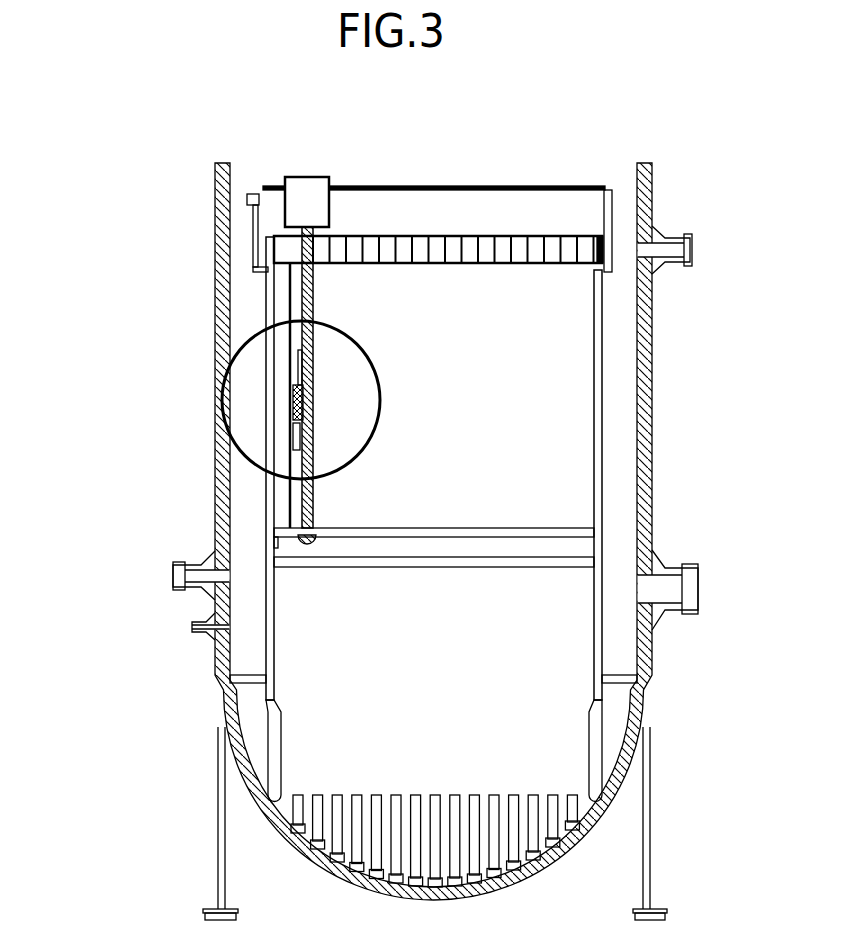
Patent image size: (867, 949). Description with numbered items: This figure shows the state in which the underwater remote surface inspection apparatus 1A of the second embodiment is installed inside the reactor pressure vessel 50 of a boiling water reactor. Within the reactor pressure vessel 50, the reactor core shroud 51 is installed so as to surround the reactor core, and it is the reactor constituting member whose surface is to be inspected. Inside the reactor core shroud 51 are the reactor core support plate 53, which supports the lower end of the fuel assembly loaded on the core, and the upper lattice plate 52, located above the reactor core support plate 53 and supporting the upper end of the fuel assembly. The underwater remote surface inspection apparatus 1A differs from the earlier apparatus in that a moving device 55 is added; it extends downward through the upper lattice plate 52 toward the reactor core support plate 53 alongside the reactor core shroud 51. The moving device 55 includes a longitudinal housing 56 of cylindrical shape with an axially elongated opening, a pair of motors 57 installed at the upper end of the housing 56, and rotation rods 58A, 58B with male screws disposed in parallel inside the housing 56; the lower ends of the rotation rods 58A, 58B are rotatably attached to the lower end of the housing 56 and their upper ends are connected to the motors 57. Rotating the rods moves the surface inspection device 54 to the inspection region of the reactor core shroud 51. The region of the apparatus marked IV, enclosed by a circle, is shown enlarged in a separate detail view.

The reactor pressure vessel 50 is at (651, 342).
The reactor core shroud 51 is at (266, 377).
The upper lattice plate 52 is at (473, 240).
The reactor core support plate 53 is at (483, 529).
The surface inspection device 54 is at (297, 408).
The moving device 55 is at (290, 492).
The housing 56 is at (290, 447).
The motor 57 is at (307, 188).
The rotation rod 58A is at (179, 385).
The rotation rod 58B is at (305, 303).
The underwater remote surface inspection apparatus 1A is at (332, 298).
The detail view IV is at (381, 417).